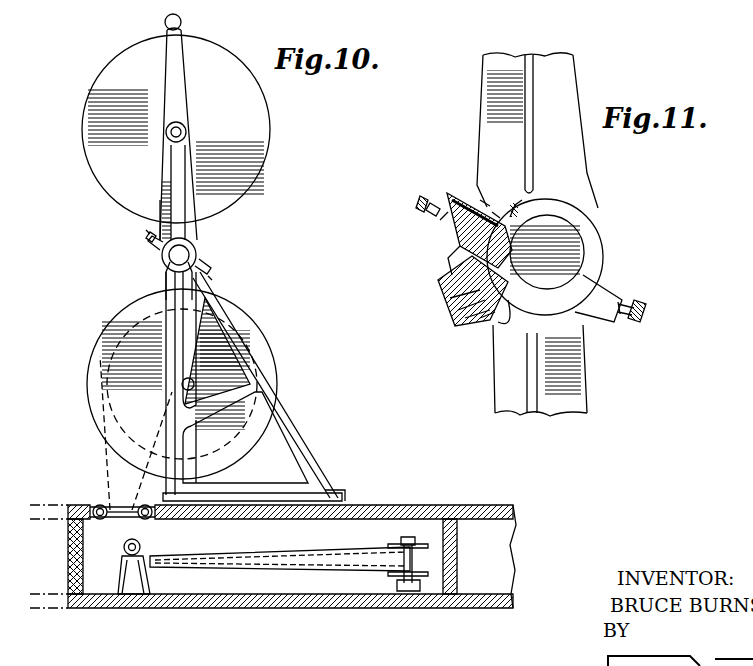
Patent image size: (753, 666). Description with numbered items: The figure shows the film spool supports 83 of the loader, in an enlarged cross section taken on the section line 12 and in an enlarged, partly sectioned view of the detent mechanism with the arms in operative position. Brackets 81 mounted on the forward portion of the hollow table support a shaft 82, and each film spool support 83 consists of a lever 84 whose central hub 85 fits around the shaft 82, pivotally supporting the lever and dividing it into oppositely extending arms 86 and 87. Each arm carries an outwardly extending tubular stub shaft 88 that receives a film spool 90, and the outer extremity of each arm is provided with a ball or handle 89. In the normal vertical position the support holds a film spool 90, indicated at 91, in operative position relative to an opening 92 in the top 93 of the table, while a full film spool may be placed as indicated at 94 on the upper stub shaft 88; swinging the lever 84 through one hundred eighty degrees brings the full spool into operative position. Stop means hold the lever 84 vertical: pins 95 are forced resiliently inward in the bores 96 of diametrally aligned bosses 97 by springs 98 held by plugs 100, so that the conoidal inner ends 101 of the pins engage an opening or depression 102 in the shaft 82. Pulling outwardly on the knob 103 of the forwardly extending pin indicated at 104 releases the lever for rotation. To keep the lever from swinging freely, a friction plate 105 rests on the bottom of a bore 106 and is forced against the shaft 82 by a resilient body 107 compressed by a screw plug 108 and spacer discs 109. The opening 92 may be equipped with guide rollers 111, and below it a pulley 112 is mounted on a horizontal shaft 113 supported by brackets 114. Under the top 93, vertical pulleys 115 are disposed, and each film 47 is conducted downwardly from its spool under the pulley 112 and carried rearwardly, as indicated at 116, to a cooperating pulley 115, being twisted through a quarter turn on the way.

In FIG. 10, the section line 12 is at (190, 105).
In FIG. 10, the film 47 is at (96, 418).
In FIG. 10, the brackets 81 is at (275, 415).
In FIG. 10, the shaft 82 is at (170, 262).
In FIG. 11, the shaft 82 is at (565, 225).
In FIG. 10, the film spool supports 83 is at (213, 233).
In FIG. 10, the lever 84 is at (165, 194).
In FIG. 11, the lever 84 is at (490, 126).
In FIG. 10, the central hub 85 is at (198, 252).
In FIG. 11, the central hub 85 is at (590, 232).
In FIG. 10, the arm 86 is at (175, 68).
In FIG. 11, the arm 86 is at (565, 82).
In FIG. 10, the arm 87 is at (192, 318).
In FIG. 11, the arm 87 is at (572, 378).
In FIG. 10, the tubular stub shaft 88 is at (186, 128).
In FIG. 10, the ball or handle 89 is at (165, 21).
In FIG. 10, the film spool 90 is at (255, 108).
In FIG. 10, the film spool in operative position 91 is at (100, 355).
In FIG. 10, the opening 92 is at (100, 505).
In FIG. 10, the top 93 is at (362, 506).
In FIG. 10, the full film spool 94 is at (212, 60).
In FIG. 11, the stop or holding pins 95 is at (628, 305).
In FIG. 11, the bores 96 is at (472, 195).
In FIG. 11, the bosses 97 is at (605, 286).
In FIG. 11, the springs 98 is at (458, 240).
In FIG. 11, the plugs 100 is at (450, 200).
In FIG. 11, the conoidal inner ends 101 is at (530, 215).
In FIG. 11, the opening or depression 102 is at (445, 272).
In FIG. 11, the knob 103 is at (426, 205).
In FIG. 10, the forwardly extending pin 104 is at (147, 243).
In FIG. 11, the forwardly extending pin 104 is at (445, 216).
In FIG. 11, the friction plate 105 is at (500, 330).
In FIG. 11, the bore 106 is at (483, 322).
In FIG. 11, the resilient body 107 is at (458, 312).
In FIG. 11, the screw plug 108 is at (452, 300).
In FIG. 11, the spacer discs 109 is at (468, 320).
In FIG. 10, the guide rollers 111 is at (112, 520).
In FIG. 10, the pulley 112 is at (142, 545).
In FIG. 10, the horizontal shaft 113 is at (125, 560).
In FIG. 10, the brackets 114 is at (112, 600).
In FIG. 10, the vertical pulleys 115 is at (395, 540).
In FIG. 10, the film carried rearwardly 116 is at (282, 560).